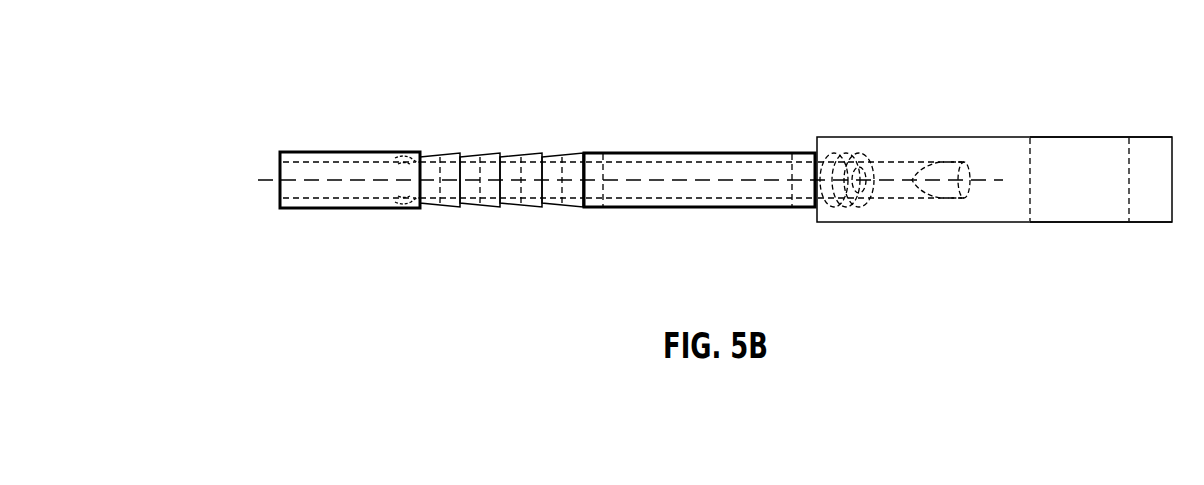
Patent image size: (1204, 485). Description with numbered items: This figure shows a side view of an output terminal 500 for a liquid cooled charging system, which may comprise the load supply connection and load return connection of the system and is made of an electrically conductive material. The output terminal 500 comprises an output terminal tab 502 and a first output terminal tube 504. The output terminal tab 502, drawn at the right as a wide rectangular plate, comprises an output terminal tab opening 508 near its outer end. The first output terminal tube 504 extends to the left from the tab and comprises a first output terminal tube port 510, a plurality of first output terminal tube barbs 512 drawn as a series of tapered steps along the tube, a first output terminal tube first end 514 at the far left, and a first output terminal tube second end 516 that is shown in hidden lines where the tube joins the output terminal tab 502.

The output terminal 500 is at (218, 108).
The output terminal tab 502 is at (1015, 223).
The first output terminal tube 504 is at (714, 232).
The output terminal tab opening 508 is at (1088, 242).
The first output terminal tube port 510 is at (400, 135).
The first output terminal tube barbs 512 is at (513, 138).
The first output terminal tube first end 514 is at (246, 158).
The first output terminal tube second end 516 is at (945, 200).